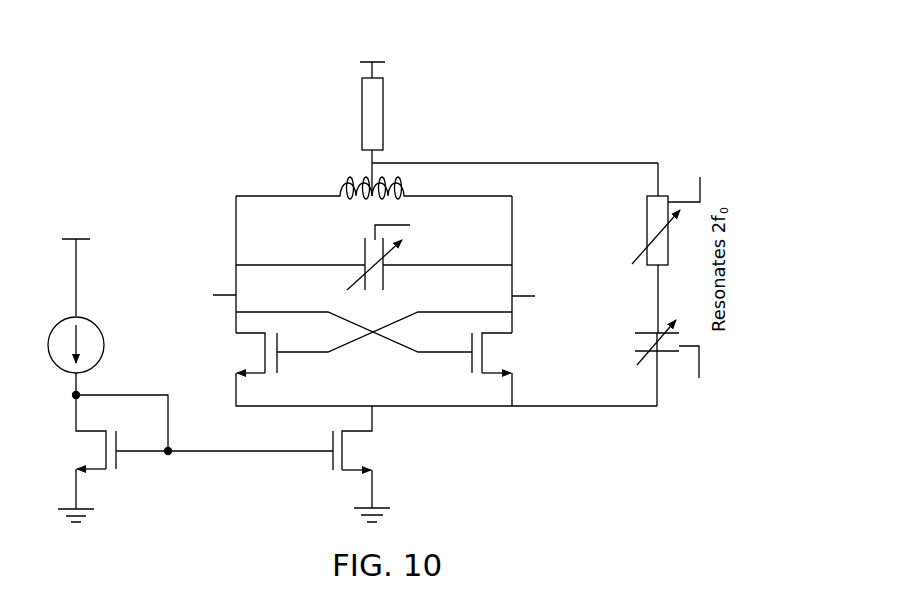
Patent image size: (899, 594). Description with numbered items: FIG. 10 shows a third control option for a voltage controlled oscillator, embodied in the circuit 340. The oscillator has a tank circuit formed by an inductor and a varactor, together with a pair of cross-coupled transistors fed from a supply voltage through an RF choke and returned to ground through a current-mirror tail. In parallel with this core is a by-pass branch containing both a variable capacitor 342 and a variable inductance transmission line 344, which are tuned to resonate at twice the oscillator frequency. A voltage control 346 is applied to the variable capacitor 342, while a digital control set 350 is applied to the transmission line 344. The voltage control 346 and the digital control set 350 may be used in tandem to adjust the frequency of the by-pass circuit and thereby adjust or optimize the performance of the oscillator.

The circuit 340 is at (656, 68).
The variable capacitor 342 is at (633, 353).
The variable inductance transmission line T2 344 is at (645, 239).
The voltage control V2 346 is at (701, 369).
The digital control set O3 350 is at (717, 160).